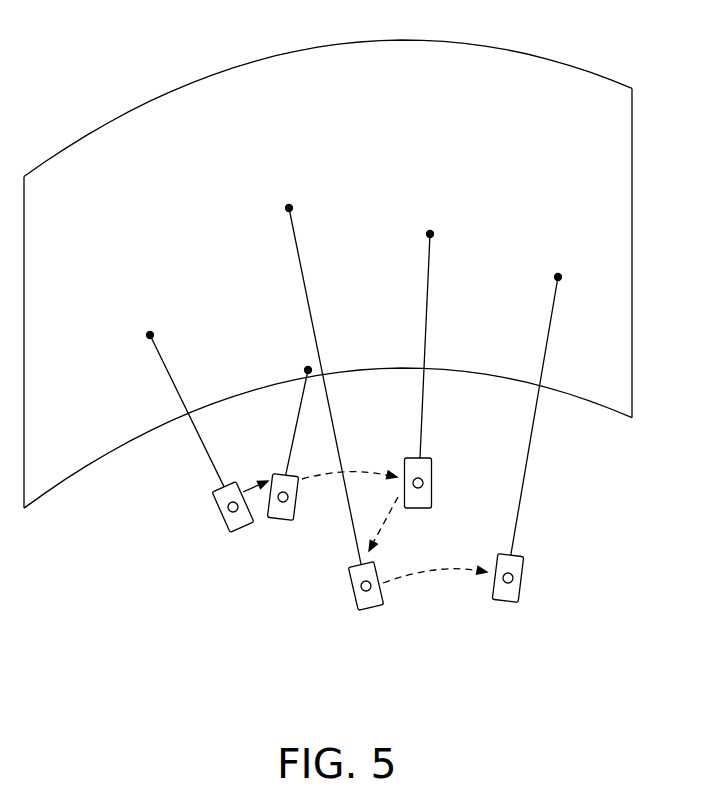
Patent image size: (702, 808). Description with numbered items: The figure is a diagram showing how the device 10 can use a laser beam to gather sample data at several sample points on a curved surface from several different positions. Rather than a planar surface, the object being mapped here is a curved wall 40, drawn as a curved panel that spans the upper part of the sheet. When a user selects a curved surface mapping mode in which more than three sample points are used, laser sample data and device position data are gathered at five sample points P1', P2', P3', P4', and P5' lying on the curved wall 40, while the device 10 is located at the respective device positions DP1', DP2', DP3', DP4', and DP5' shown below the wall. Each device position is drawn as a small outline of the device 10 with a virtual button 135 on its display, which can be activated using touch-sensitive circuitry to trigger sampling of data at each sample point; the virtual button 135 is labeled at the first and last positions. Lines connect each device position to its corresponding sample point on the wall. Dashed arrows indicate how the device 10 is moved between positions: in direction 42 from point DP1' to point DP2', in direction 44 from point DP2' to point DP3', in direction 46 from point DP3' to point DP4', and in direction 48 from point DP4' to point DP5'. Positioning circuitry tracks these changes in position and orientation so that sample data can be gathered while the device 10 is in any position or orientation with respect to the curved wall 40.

The curved wall 40 is at (243, 83).
The device 10 is at (237, 545).
The virtual button 135 is at (222, 512).
The direction 42 is at (250, 489).
The direction 44 is at (361, 473).
The direction 46 is at (384, 512).
The direction 48 is at (442, 572).
The sample point P1' is at (179, 394).
The sample point P2' is at (295, 408).
The sample point P3' is at (431, 329).
The sample point P4' is at (316, 371).
The sample point P5' is at (545, 400).
The device position DP1' is at (249, 545).
The device position DP2' is at (302, 526).
The device position DP3' is at (461, 467).
The device position DP4' is at (372, 620).
The device position DP5' is at (540, 601).